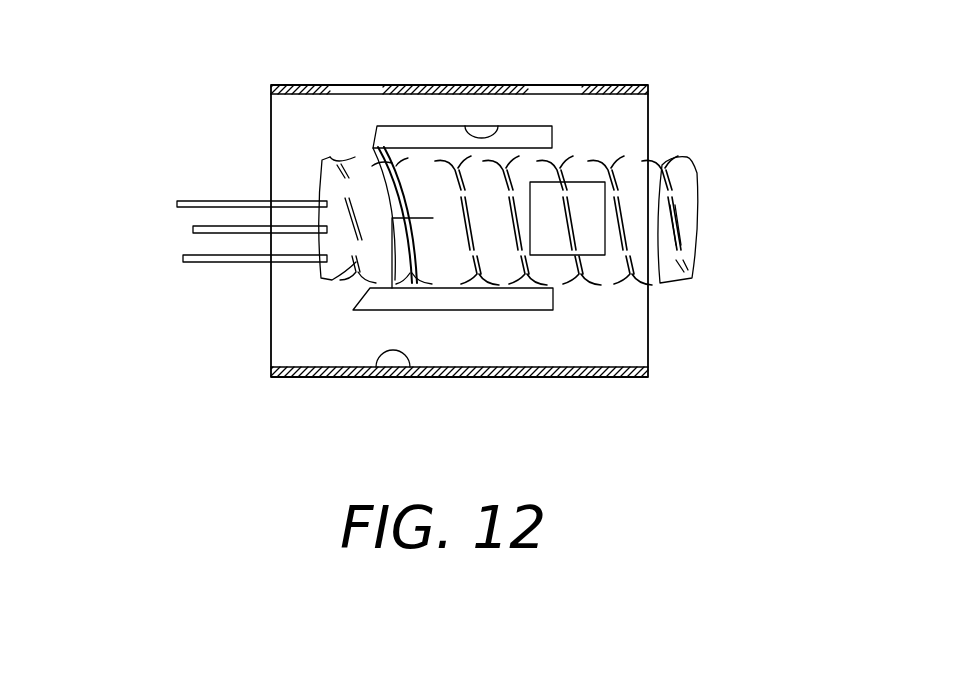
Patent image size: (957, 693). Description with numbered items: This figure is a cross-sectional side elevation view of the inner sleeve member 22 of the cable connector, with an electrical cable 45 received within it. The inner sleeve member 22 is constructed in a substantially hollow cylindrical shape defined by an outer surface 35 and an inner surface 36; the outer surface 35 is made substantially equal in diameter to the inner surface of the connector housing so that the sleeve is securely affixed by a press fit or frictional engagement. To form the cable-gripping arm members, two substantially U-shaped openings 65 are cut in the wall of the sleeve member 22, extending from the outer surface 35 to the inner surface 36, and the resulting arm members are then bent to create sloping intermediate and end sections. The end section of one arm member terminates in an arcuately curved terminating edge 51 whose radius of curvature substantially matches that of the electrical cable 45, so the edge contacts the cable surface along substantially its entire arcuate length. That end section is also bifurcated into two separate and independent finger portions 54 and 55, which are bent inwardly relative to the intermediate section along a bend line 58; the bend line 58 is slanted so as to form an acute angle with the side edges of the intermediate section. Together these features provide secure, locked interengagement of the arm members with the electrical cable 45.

The inner sleeve member 22 is at (648, 332).
The outer surface 35 is at (610, 378).
The inner surface 36 is at (408, 361).
The electrical cable 45 is at (697, 210).
The terminating edge 51 is at (380, 263).
The finger portion 54 is at (373, 263).
The finger portion 55 is at (433, 217).
The bend line 58 is at (417, 233).
The U-shaped opening 65 is at (498, 137).